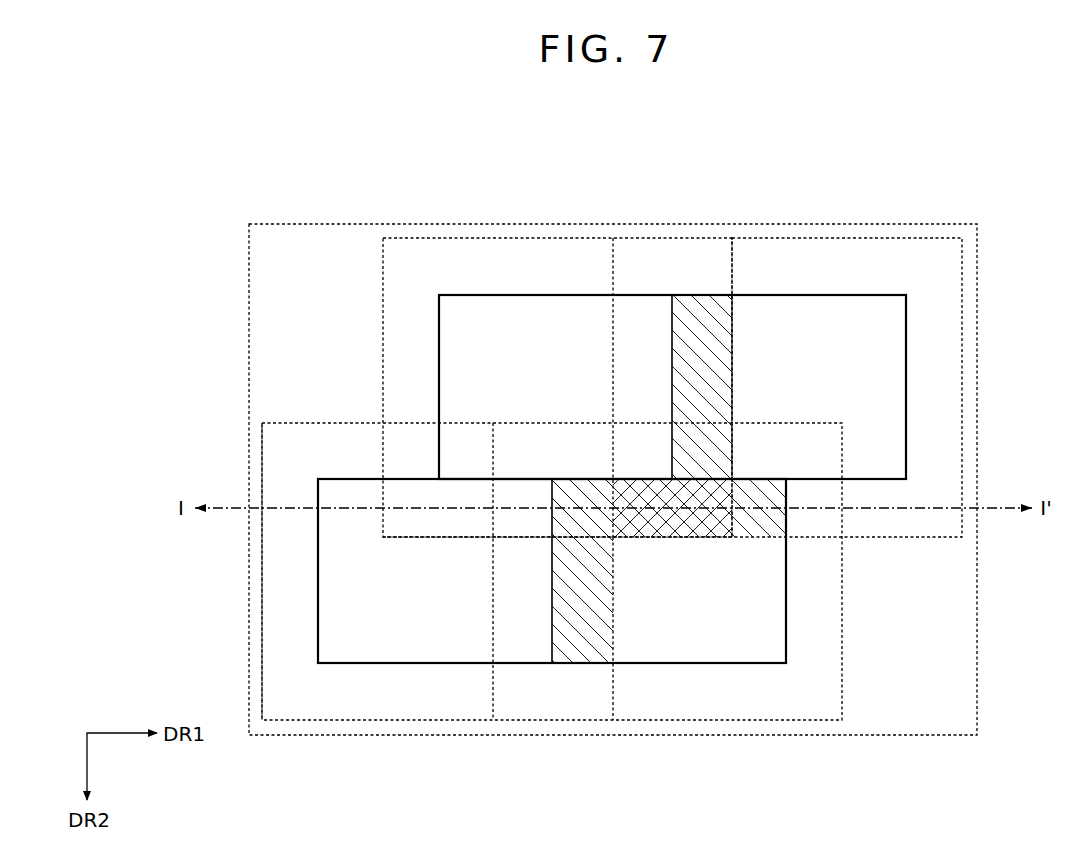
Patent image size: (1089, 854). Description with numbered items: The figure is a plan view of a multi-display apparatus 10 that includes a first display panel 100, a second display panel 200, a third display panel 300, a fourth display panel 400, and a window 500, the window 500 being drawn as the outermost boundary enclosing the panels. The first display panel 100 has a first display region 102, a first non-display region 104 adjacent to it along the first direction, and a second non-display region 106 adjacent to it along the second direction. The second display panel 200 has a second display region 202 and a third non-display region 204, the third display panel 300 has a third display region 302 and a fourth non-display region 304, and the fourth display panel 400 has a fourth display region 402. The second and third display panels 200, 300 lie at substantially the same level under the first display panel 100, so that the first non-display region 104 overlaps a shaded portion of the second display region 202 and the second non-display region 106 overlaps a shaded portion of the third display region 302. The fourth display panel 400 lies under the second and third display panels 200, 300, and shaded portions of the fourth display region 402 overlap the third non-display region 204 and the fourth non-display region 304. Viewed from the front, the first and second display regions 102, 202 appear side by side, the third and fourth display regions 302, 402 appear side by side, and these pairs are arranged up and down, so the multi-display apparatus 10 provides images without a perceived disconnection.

The multi-display apparatus 10 is at (1003, 170).
The first display panel 100 is at (412, 238).
The first display region 102 is at (487, 295).
The first non-display region 104 is at (697, 295).
The second non-display region 106 is at (432, 537).
The second display panel 200 is at (843, 238).
The second display region 202 is at (775, 295).
The third non-display region 204 is at (762, 537).
The third display panel 300 is at (262, 566).
The third display region 302 is at (318, 622).
The fourth non-display region 304 is at (579, 658).
The fourth display panel 400 is at (843, 672).
The fourth display region 402 is at (787, 625).
The window 500 is at (249, 331).